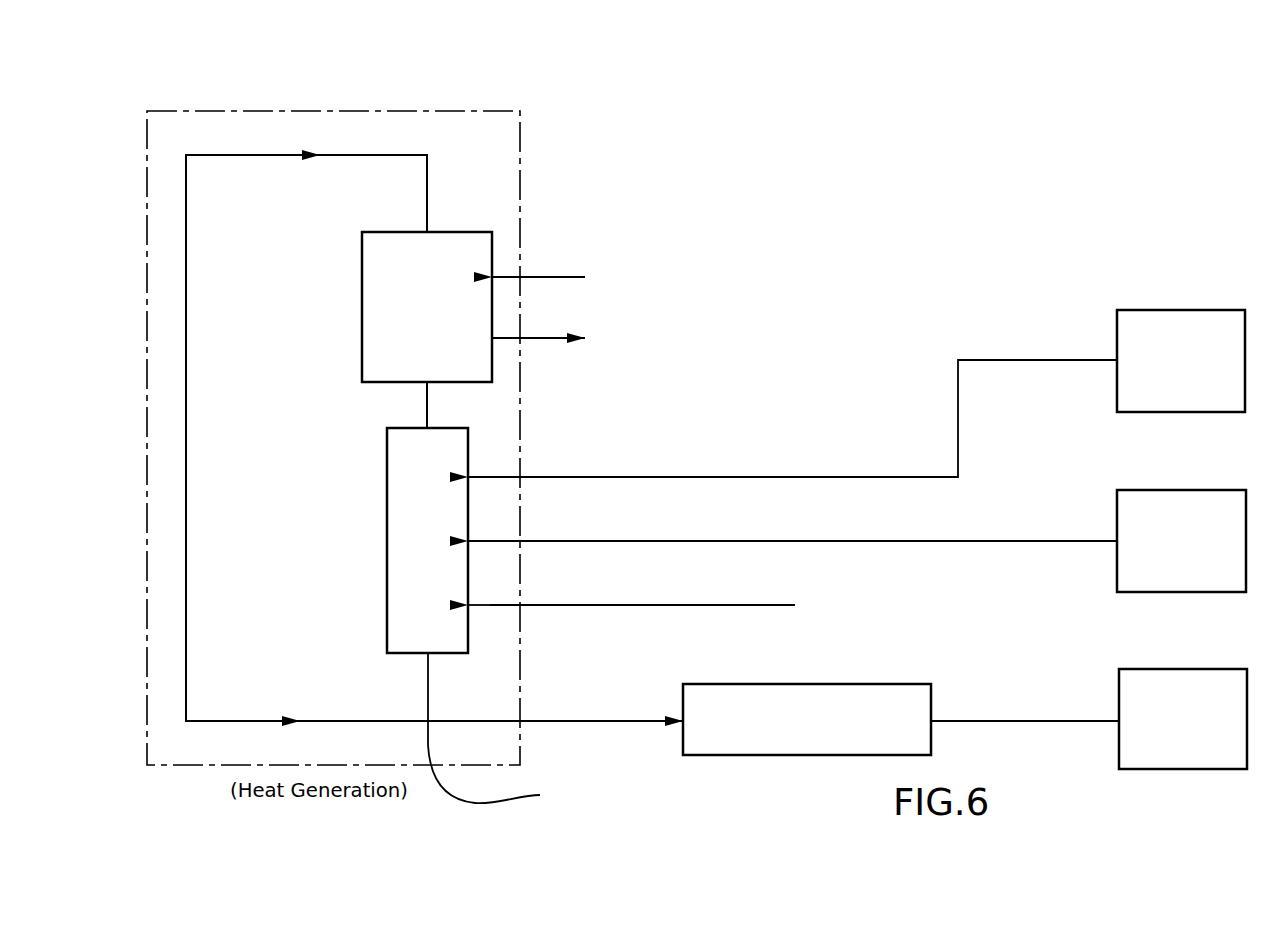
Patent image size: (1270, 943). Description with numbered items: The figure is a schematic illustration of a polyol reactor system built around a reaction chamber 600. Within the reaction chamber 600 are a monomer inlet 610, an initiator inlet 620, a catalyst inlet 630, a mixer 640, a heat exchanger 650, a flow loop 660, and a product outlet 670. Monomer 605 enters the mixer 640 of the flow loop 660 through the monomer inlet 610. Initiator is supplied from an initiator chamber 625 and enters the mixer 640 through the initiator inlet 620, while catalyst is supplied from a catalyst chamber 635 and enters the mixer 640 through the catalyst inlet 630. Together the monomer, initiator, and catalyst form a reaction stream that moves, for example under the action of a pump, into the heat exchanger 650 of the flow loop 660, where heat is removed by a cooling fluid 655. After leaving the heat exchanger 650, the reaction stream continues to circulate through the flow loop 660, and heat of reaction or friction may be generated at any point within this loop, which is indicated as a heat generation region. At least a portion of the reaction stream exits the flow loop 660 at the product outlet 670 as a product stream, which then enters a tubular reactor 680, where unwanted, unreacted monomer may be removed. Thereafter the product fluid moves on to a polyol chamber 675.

The reaction chamber 600 is at (333, 110).
The monomer 605 is at (715, 605).
The monomer inlet 610 is at (468, 600).
The initiator inlet 620 is at (468, 537).
The initiator chamber 625 is at (1166, 580).
The catalyst inlet 630 is at (468, 473).
The catalyst chamber 635 is at (1166, 400).
The mixer 640 is at (387, 529).
The heat exchanger 650 is at (555, 283).
The cooling fluid 655 is at (627, 307).
The flow loop 660 is at (330, 721).
The product outlet 670 is at (584, 732).
The polyol chamber 675 is at (1168, 758).
The tubular reactor 680 is at (910, 736).